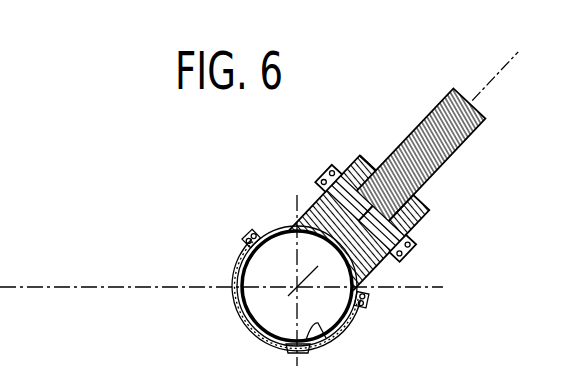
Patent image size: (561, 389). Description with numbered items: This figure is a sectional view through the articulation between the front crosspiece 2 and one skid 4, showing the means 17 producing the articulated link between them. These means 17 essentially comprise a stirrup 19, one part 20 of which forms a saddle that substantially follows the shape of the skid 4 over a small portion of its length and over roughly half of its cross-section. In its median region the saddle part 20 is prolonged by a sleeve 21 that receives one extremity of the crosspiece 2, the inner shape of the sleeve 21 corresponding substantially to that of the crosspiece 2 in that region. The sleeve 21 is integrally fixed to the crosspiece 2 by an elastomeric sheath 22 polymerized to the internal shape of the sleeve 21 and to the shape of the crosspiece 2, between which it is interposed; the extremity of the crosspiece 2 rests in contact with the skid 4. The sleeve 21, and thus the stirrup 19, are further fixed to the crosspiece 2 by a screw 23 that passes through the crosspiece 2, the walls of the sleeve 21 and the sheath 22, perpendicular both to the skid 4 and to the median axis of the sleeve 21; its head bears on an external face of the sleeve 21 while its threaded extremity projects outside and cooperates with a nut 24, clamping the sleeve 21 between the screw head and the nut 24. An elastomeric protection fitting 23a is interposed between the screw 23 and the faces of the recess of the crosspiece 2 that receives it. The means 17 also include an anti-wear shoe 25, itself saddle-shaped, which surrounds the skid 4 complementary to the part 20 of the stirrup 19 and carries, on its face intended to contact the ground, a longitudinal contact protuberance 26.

The front crosspiece 2 is at (452, 128).
The skid 4 is at (312, 328).
The means producing the articulated link 17 is at (408, 272).
The stirrup 19 is at (368, 275).
The part forming a saddle 20 is at (267, 230).
The sleeve 21 is at (320, 222).
The elastomeric sheath 22 is at (428, 204).
The screw 23 is at (336, 170).
The elastomeric protection fitting 23a is at (363, 157).
The nut 24 is at (410, 250).
The anti-wear shoe 25 is at (235, 302).
The longitudinal contact protuberance 26 is at (287, 350).